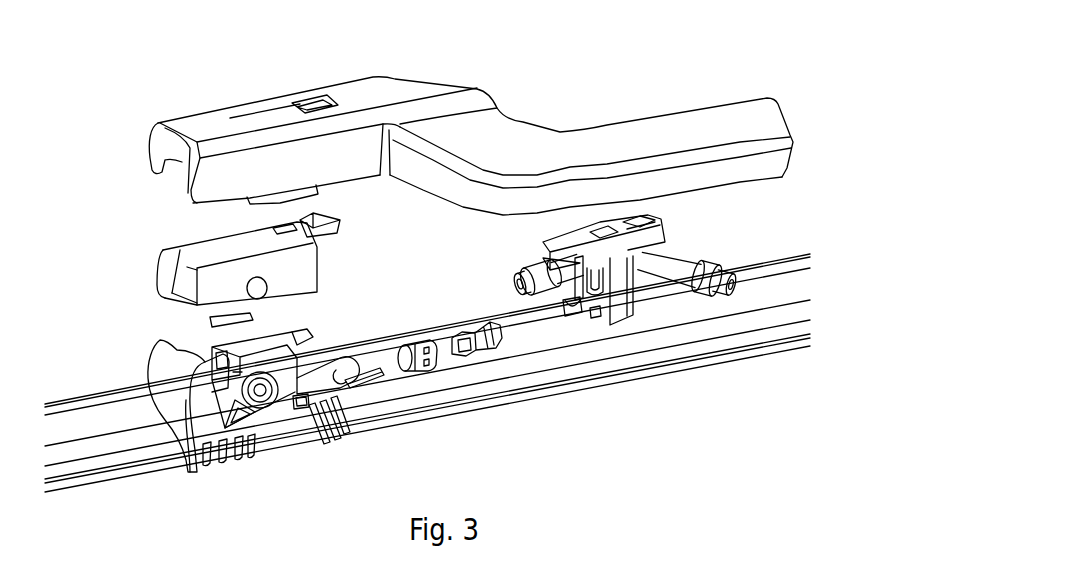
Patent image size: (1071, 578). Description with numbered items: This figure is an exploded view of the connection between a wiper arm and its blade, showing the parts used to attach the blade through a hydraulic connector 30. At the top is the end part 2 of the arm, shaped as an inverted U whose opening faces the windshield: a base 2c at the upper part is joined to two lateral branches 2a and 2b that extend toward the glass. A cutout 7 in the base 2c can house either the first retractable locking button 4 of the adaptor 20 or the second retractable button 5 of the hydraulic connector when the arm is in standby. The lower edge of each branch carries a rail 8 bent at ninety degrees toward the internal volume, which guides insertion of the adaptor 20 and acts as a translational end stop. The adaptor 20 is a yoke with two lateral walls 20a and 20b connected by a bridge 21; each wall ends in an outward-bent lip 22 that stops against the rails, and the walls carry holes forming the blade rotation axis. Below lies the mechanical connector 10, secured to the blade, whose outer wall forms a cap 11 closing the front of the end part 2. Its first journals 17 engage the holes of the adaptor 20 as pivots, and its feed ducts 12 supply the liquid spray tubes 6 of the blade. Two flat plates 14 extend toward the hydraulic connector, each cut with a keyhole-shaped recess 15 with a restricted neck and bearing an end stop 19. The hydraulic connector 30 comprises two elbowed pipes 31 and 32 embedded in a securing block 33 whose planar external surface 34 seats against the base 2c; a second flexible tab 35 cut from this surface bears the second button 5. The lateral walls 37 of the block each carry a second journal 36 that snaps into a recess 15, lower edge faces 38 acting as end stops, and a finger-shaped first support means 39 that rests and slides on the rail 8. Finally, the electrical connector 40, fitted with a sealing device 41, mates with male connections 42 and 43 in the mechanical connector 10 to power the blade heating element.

The end part 2 is at (435, 119).
The lateral branch 2a is at (158, 153).
The lateral branch 2b is at (198, 197).
The base 2c is at (205, 123).
The first retractable locking button 4 is at (340, 213).
The second retractable button 5 is at (588, 224).
The liquid spray tubes 6 is at (115, 467).
The cutout 7 is at (326, 97).
The rail 8 is at (268, 200).
The mechanical connector 10 is at (285, 393).
The cap 11 is at (160, 358).
The feed ducts 12 is at (205, 452).
The flat plates 14 is at (307, 323).
The keyhole-shaped recess 15 is at (350, 398).
The first journals 17 is at (263, 397).
The end stop 19 is at (303, 407).
The adaptor 20 is at (220, 278).
The lateral wall 20a is at (157, 283).
The lateral wall 20b is at (192, 299).
The bridge 21 is at (235, 240).
The lip 22 is at (240, 330).
The hydraulic connector 30 is at (611, 323).
The pipe 31 is at (515, 284).
The pipe 32 is at (530, 300).
The securing block 33 is at (680, 250).
The external surface 34 is at (658, 230).
The second flexible tab 35 is at (640, 220).
The second journal 36 is at (603, 295).
The lateral walls 37 is at (625, 300).
The edge faces 38 is at (595, 320).
The first support means 39 is at (571, 322).
The electrical connector 40 is at (480, 352).
The sealing device 41 is at (422, 372).
The male connection 42 is at (338, 364).
The male connection 43 is at (372, 382).